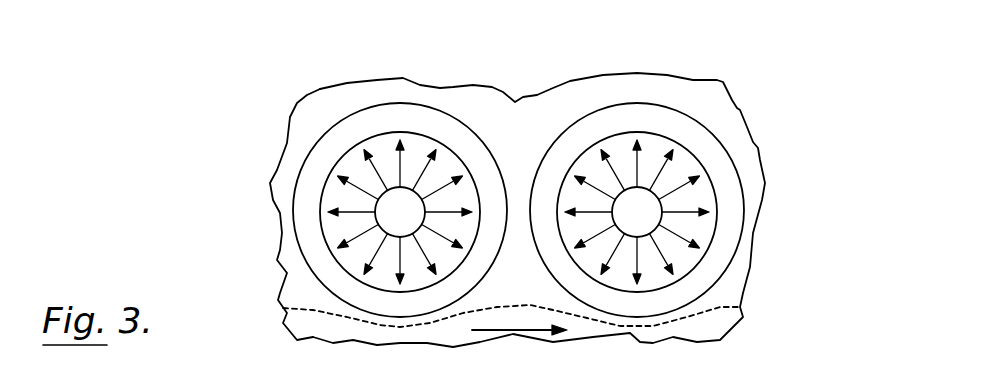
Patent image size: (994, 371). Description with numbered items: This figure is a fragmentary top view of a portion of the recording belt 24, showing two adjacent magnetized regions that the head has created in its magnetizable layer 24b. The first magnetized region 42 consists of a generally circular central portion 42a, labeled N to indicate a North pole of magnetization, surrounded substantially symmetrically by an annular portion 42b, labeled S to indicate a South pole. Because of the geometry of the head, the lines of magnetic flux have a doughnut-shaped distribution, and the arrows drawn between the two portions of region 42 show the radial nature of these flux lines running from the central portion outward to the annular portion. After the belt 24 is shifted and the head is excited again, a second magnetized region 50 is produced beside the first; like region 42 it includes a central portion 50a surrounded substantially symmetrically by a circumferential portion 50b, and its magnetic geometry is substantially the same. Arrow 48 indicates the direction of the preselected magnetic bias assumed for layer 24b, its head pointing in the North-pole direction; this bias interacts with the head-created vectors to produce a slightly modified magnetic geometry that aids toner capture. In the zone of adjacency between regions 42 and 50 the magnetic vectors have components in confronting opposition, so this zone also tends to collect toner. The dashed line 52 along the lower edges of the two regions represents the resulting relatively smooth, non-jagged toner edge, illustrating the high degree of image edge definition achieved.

The belt 24 is at (480, 210).
The magnetizable layer 24b is at (280, 233).
The magnetized region 42 is at (378, 191).
The central portion 42a is at (388, 172).
The annular portion 42b is at (442, 125).
The arrow 48 is at (513, 331).
The magnetized region 50 is at (675, 188).
The central portion 50a is at (627, 172).
The circumferential portion 50b is at (733, 170).
The dashed line 52 is at (695, 315).